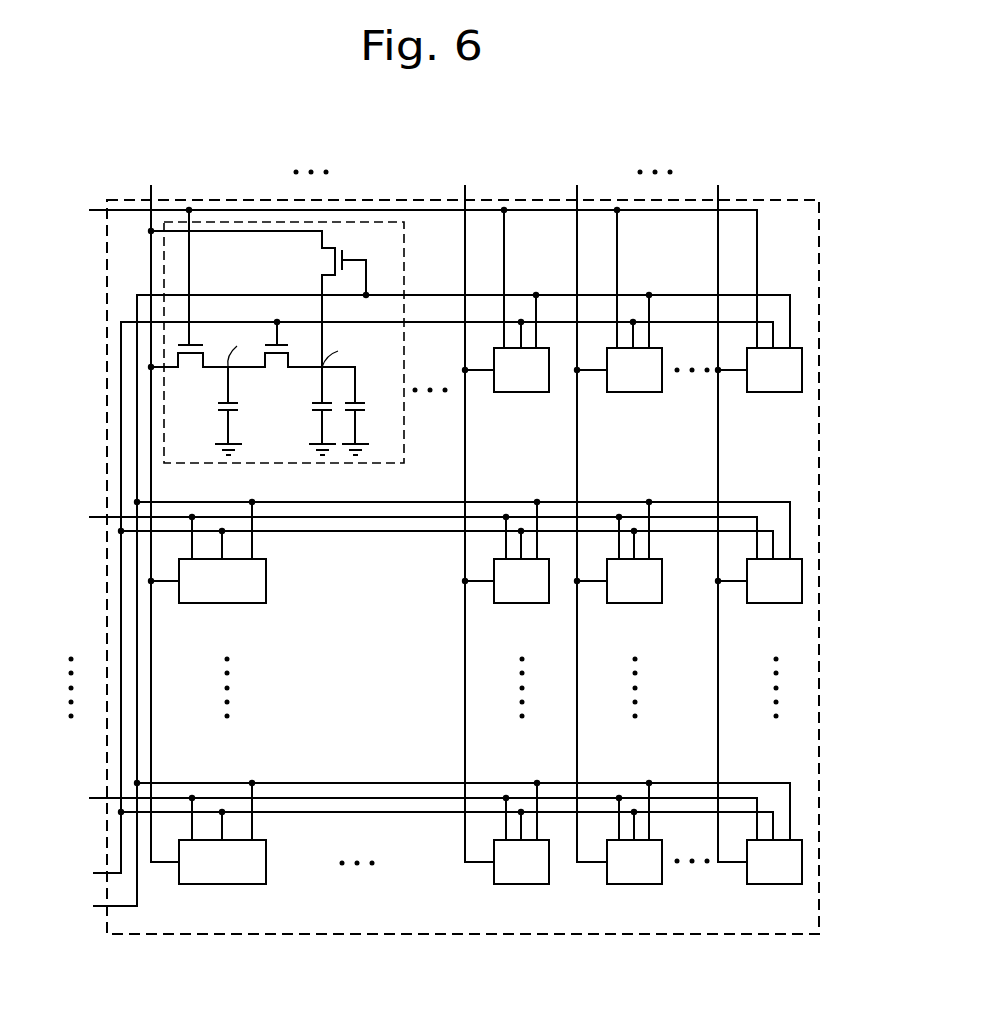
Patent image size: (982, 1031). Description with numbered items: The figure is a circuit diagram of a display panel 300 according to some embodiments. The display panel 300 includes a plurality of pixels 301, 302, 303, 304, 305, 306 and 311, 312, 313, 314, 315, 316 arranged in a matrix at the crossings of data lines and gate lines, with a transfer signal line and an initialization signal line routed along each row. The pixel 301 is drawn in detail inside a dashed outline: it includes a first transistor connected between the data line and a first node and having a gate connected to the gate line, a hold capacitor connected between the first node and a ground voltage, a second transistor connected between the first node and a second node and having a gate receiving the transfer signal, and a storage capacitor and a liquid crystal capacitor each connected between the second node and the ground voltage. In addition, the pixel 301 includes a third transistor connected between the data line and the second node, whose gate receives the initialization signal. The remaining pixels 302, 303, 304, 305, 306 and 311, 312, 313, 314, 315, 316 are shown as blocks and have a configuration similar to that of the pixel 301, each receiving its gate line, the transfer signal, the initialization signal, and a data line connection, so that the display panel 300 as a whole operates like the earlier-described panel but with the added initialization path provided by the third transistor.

The display panel 300 is at (784, 200).
The pixel 301 is at (404, 436).
The pixel 302 is at (539, 385).
The pixel 303 is at (240, 596).
The pixel 304 is at (539, 596).
The pixel 305 is at (240, 877).
The pixel 306 is at (539, 877).
The pixel 311 is at (652, 385).
The pixel 312 is at (792, 385).
The pixel 313 is at (652, 596).
The pixel 314 is at (792, 596).
The pixel 315 is at (652, 877).
The pixel 316 is at (792, 877).